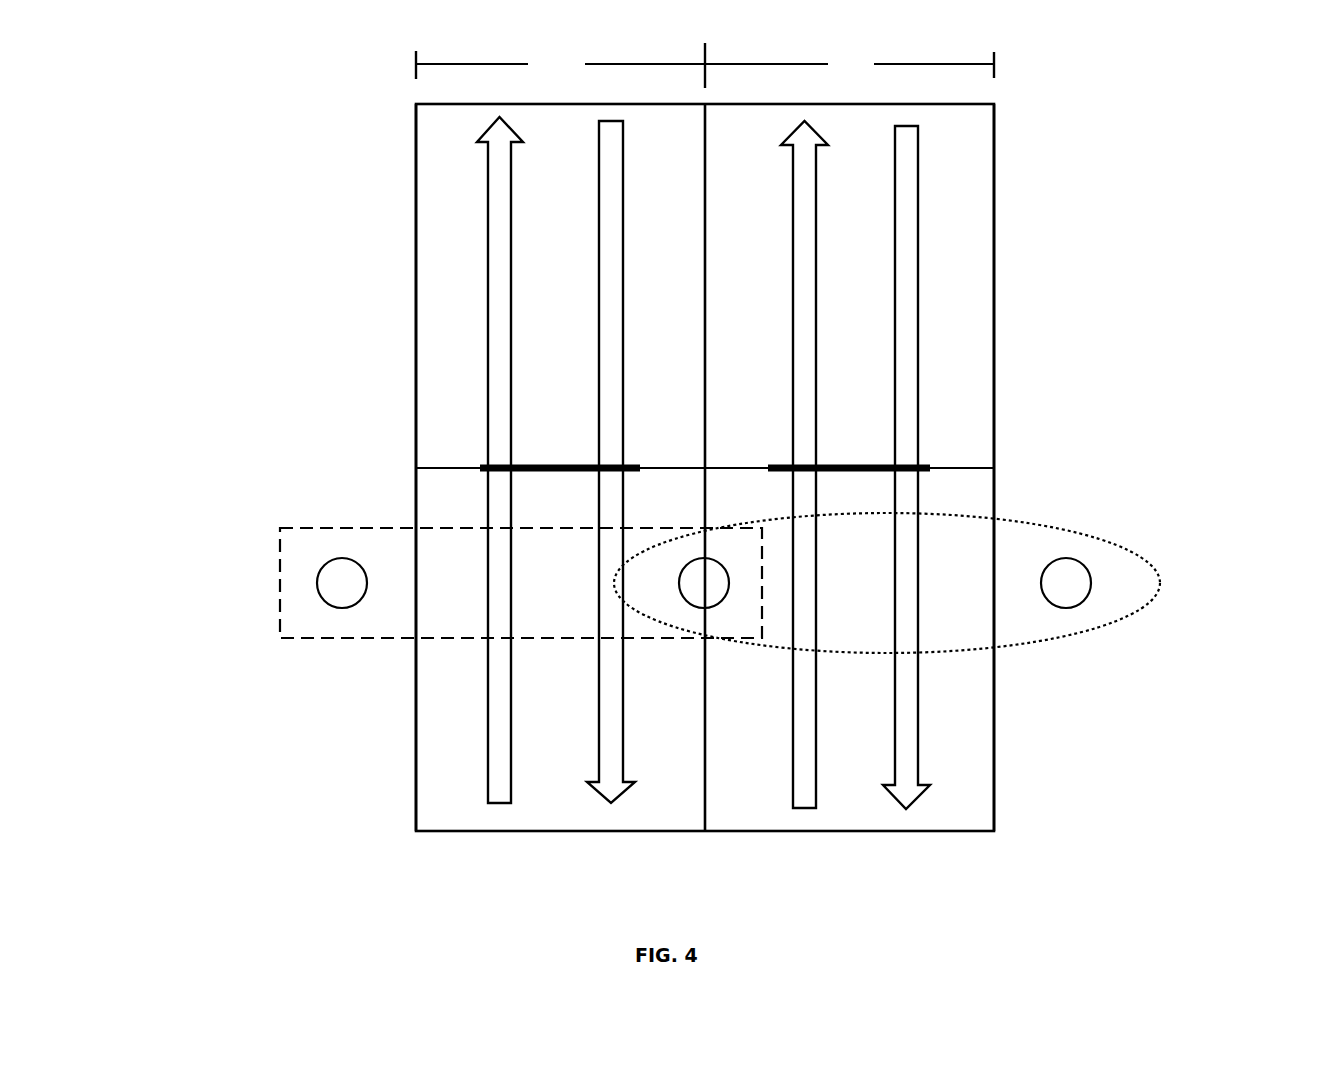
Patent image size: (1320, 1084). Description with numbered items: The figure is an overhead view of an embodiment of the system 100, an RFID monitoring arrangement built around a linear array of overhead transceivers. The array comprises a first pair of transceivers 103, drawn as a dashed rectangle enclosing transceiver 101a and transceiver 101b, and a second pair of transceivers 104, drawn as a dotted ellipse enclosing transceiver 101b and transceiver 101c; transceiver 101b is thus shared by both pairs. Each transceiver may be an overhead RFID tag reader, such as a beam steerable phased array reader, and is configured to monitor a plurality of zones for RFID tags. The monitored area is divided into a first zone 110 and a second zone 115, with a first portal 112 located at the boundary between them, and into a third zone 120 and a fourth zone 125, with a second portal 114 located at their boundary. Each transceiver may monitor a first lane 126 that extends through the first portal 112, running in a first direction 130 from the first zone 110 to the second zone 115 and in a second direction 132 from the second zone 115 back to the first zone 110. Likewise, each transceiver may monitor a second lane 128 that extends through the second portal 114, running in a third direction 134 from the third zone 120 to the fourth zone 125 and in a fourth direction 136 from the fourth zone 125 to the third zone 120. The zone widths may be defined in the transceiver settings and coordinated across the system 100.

The system 100 is at (258, 262).
The second zone 115 is at (413, 137).
The fourth zone 125 is at (996, 152).
The first zone 110 is at (413, 815).
The third zone 120 is at (997, 818).
The first lane 126 is at (560, 65).
The second lane 128 is at (849, 65).
The first portal 112 is at (481, 463).
The second portal 114 is at (931, 459).
The first direction 130 is at (499, 805).
The second direction 132 is at (611, 805).
The third direction 134 is at (805, 810).
The fourth direction 136 is at (906, 811).
The first pair of transceivers 103 is at (278, 527).
The second pair of transceivers 104 is at (1140, 613).
The transceiver 101a is at (312, 604).
The transceiver 101b is at (718, 614).
The transceiver 101c is at (1096, 566).